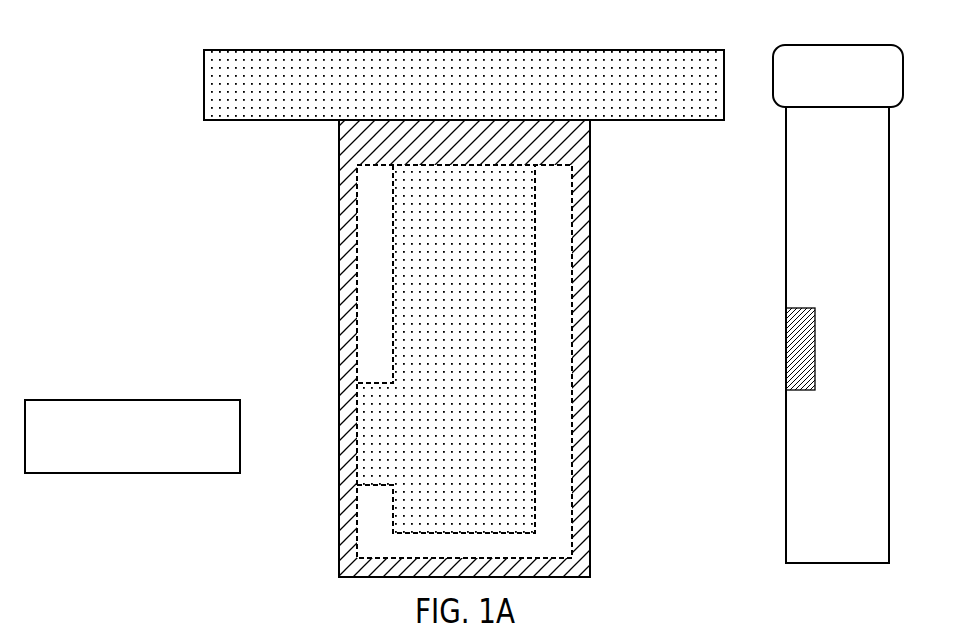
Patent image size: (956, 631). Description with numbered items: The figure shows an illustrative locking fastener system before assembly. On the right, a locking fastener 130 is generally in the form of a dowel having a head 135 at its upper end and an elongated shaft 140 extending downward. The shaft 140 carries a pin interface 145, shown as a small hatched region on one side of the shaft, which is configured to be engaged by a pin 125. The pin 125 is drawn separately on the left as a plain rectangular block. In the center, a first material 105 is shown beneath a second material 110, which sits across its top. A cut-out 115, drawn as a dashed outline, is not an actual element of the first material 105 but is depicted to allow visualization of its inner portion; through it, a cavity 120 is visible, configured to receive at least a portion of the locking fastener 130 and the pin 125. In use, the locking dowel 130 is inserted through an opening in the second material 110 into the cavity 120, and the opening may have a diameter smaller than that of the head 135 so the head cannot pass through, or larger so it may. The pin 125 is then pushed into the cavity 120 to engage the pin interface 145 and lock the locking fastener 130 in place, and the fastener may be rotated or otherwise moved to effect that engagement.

The first material 105 is at (590, 560).
The second material 110 is at (672, 50).
The cut-out 115 is at (575, 212).
The cavity 120 is at (535, 315).
The pin 125 is at (170, 403).
The locking fastener 130 is at (890, 206).
The head 135 is at (877, 45).
The shaft 140 is at (890, 406).
The pin interface 145 is at (786, 335).